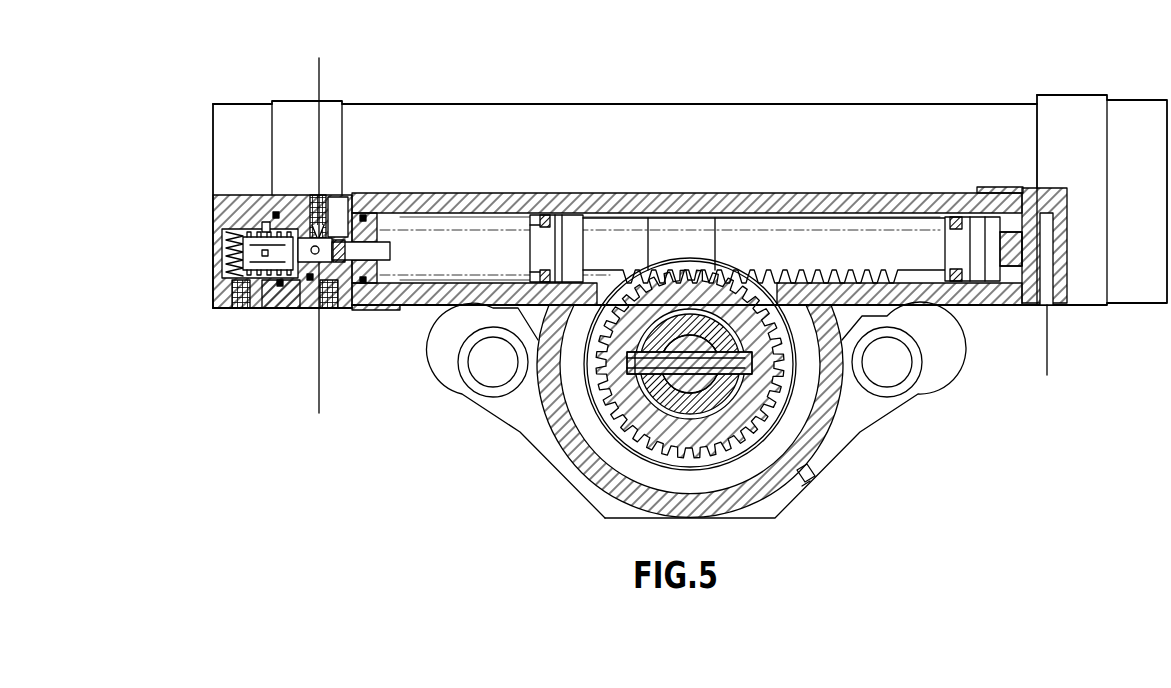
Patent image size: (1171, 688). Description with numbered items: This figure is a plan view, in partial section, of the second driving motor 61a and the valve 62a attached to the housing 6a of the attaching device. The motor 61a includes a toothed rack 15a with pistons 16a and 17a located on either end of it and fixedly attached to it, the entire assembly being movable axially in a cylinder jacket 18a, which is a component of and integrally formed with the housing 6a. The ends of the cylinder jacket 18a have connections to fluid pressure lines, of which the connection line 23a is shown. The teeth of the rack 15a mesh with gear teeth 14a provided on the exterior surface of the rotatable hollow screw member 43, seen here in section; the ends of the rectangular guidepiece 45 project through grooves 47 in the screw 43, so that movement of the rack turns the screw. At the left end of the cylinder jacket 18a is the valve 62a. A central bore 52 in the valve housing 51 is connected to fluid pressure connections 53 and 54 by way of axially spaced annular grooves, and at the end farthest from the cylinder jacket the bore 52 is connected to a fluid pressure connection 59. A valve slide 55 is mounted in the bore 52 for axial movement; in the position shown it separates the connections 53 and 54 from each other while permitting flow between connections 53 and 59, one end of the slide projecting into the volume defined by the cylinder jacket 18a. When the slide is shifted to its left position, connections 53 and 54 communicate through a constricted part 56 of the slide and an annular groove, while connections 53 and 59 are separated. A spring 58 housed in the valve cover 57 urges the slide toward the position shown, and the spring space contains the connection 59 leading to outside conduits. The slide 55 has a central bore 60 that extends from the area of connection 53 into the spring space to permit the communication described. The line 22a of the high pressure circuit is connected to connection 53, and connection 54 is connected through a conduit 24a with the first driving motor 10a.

The first driving motor 10a is at (672, 95).
The housing 6a is at (823, 453).
The gear teeth 14a is at (630, 413).
The toothed rack 15a is at (743, 230).
The piston 16a is at (580, 220).
The piston 17a is at (948, 192).
The cylinder jacket 18a is at (655, 202).
The line of the high pressure circuit 22a is at (320, 160).
The connection line 23a is at (1047, 337).
The conduit 24a is at (330, 335).
The rotatable hollow screw member 43 is at (620, 327).
The guidepiece 45 is at (753, 357).
The grooves 47 is at (657, 380).
The valve housing 51 is at (310, 247).
The central bore 52 is at (318, 196).
The fluid pressure connection 53 is at (325, 197).
The fluid pressure connection 54 is at (327, 310).
The valve slide 55 is at (280, 310).
The constricted part 56 is at (390, 240).
The valve cover 57 is at (233, 217).
The spring 58 is at (223, 269).
The fluid pressure connection 59 is at (240, 310).
The central bore 60 is at (266, 222).
The second driving motor 61a is at (370, 410).
The valve 62a is at (200, 236).